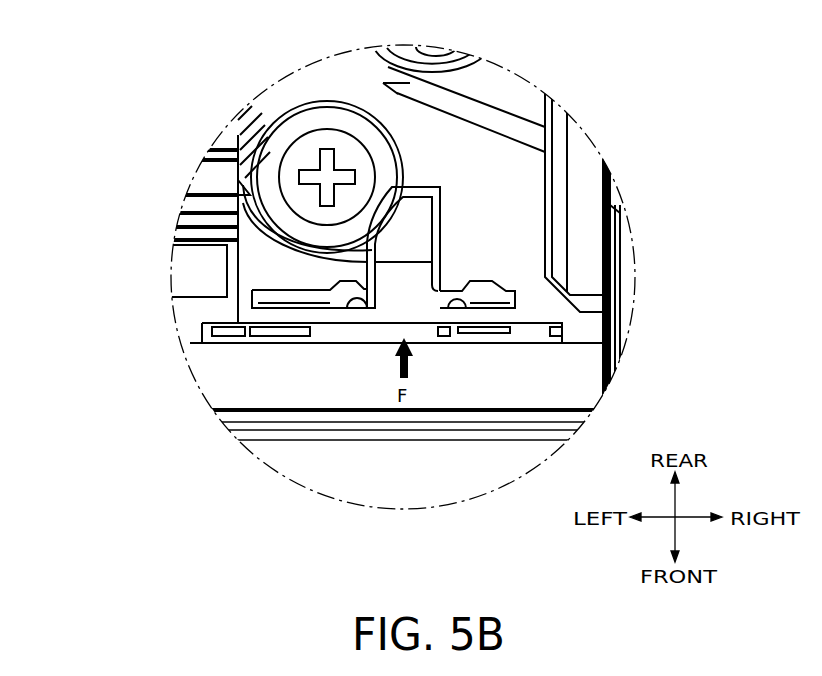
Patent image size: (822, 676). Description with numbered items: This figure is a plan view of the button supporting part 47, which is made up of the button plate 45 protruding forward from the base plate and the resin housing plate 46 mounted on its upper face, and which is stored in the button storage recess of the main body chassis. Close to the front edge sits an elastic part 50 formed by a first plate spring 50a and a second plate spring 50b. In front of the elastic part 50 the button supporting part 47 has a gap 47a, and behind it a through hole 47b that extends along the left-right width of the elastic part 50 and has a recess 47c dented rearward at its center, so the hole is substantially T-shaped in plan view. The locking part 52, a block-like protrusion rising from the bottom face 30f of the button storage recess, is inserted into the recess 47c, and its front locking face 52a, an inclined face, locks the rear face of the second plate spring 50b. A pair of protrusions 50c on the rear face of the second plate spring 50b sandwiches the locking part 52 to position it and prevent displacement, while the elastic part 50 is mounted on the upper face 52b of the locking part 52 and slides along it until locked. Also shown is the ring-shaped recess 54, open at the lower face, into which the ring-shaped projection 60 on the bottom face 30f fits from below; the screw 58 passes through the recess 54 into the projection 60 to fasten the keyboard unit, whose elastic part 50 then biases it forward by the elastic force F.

The ring-shaped projection 60 is at (332, 116).
The ring-shaped recess 54 is at (360, 57).
The screw 58 is at (303, 163).
The upper face of the locking part 52b is at (368, 282).
The protrusions 50c is at (392, 278).
The locking part 52 is at (414, 224).
The recess of the through hole 47c is at (437, 232).
The through hole 47b is at (443, 284).
The housing plate 46 is at (540, 298).
The button plate 45 is at (540, 329).
The button supporting part 47 is at (706, 283).
The bottom face of the button storage recess 30f is at (285, 343).
The gap 47a is at (352, 343).
The locking face 52a is at (387, 308).
The first plate spring 50a is at (423, 330).
The second plate spring 50b is at (448, 318).
The elastic part 50 is at (520, 556).